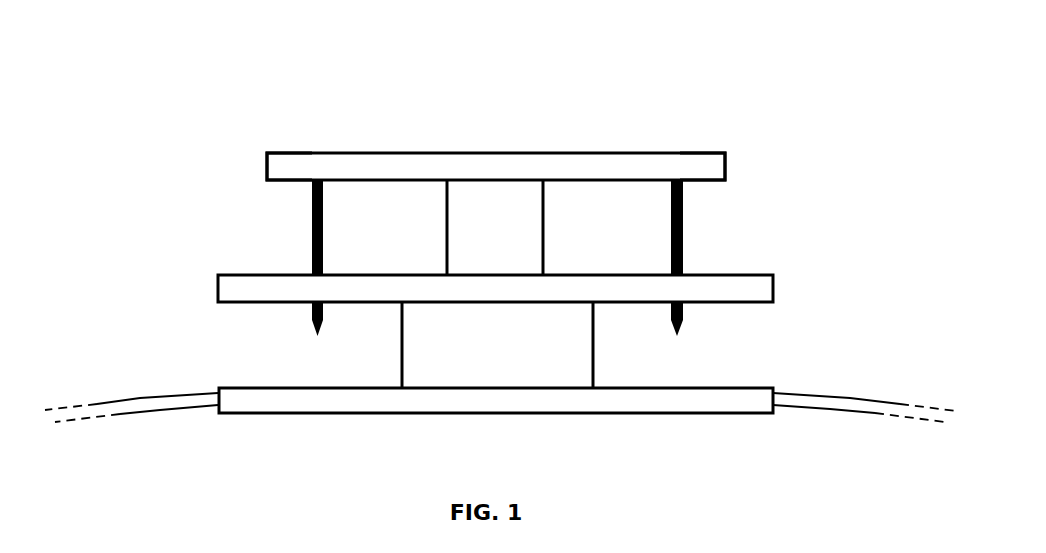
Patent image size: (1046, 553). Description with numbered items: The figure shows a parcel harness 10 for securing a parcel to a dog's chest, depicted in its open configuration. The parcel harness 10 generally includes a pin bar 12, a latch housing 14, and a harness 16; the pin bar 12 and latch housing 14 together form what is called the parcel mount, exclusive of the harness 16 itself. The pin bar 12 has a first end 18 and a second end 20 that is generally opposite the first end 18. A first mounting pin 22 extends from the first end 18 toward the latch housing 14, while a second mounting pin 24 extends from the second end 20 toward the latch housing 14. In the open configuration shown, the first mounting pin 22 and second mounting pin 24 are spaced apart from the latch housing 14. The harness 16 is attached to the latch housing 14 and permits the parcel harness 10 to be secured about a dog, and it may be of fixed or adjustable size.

The parcel harness 10 is at (603, 95).
The pin bar 12 is at (463, 166).
The latch housing 14 is at (282, 400).
The harness 16 is at (853, 404).
The first end 18 is at (276, 165).
The second end 20 is at (712, 165).
The first mounting pin 22 is at (315, 228).
The second mounting pin 24 is at (683, 227).